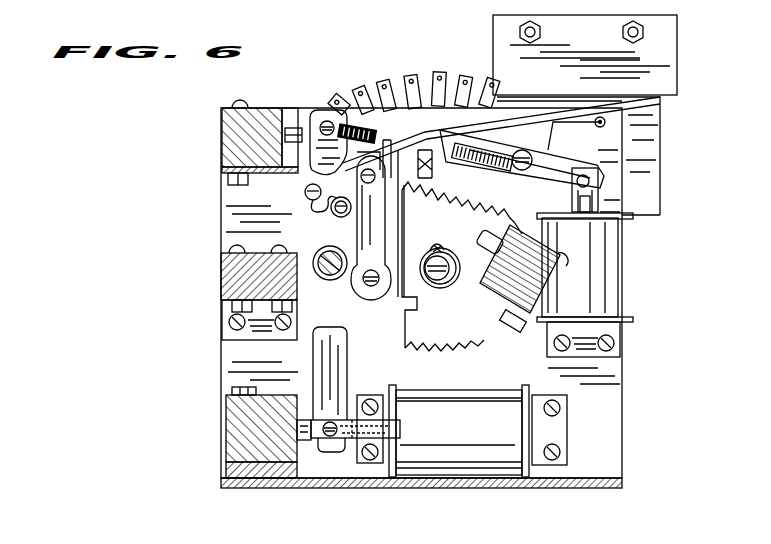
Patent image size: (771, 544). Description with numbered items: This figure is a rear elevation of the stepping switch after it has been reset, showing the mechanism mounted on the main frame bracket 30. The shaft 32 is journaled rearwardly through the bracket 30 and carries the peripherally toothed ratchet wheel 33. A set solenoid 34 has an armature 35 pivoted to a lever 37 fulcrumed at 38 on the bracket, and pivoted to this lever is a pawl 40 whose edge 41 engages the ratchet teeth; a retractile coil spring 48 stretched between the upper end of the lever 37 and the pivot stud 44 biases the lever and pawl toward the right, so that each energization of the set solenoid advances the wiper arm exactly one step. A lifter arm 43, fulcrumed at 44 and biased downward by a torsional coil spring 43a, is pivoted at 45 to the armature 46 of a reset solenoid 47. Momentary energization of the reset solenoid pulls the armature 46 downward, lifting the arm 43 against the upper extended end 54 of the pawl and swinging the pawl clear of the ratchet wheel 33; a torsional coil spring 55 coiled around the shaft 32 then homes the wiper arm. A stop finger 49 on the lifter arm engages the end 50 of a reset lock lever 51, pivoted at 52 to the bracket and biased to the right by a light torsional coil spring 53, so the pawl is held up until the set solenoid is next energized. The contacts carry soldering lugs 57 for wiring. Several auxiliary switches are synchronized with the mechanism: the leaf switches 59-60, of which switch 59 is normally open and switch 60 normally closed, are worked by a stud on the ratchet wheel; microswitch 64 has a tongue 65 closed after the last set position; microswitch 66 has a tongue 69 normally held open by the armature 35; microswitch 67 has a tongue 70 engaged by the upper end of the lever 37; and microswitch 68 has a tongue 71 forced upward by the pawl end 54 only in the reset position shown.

The main frame bracket 30 is at (612, 444).
The shaft 32 is at (443, 288).
The ratchet wheel 33 is at (468, 352).
The set solenoid 34 is at (468, 458).
The armature 35 is at (356, 448).
The lever 37 is at (347, 386).
The fulcrum 38 is at (328, 281).
The pawl 40 is at (357, 120).
The edge of pawl 41 is at (432, 188).
The lifter arm 43 is at (562, 172).
The torsional coil spring 43a is at (605, 124).
The pivot stud 44 is at (522, 150).
The pivot 45 is at (590, 184).
The armature 46 is at (596, 208).
The reset solenoid 47 is at (614, 292).
The retractile coil spring 48 is at (345, 124).
The stop finger 49 is at (440, 82).
The end of reset lock lever 50 is at (387, 162).
The reset lock lever 51 is at (356, 237).
The pivot 52 is at (370, 286).
The torsional coil spring 53 is at (331, 209).
The upper extended end of pawl 54 is at (470, 118).
The torsional coil spring 55 is at (441, 250).
The soldering lugs 57 is at (413, 82).
The leaf switches 59-60 is at (213, 292).
The leaf switch 59 is at (259, 272).
The leaf switch 60 is at (211, 293).
The microswitch 64 is at (555, 294).
The operating tongue 65 is at (549, 241).
The microswitch 66 is at (226, 462).
The microswitch 67 is at (222, 150).
The microswitch 68 is at (672, 63).
The tongue 69 is at (305, 441).
The tongue 70 is at (293, 128).
The tongue 71 is at (518, 100).